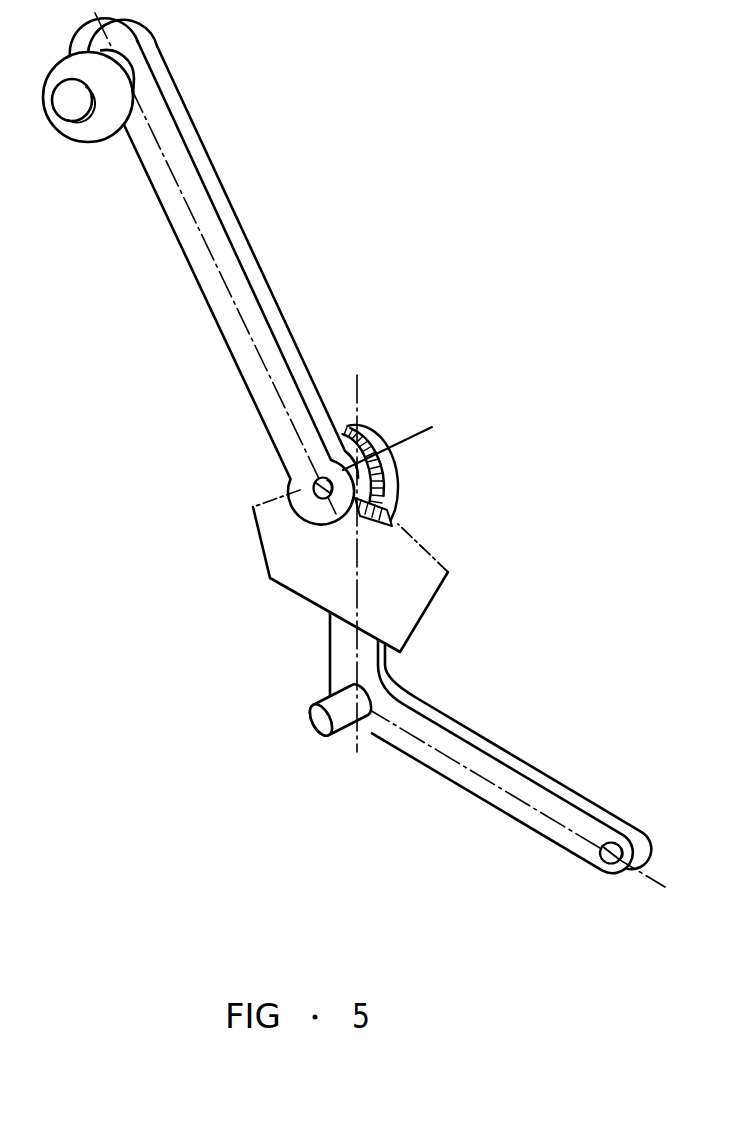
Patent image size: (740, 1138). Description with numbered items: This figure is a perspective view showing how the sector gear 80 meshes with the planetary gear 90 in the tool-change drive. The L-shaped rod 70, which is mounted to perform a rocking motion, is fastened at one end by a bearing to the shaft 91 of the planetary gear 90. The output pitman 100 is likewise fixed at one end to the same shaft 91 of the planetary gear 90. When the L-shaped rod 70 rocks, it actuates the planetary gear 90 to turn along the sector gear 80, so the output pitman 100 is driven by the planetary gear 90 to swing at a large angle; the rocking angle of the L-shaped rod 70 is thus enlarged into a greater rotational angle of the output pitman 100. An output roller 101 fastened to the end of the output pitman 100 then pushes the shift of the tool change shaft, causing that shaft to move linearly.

The L-shaped rod 70 is at (438, 715).
The sector gear 80 is at (290, 553).
The planetary gear 90 is at (348, 430).
The shaft of the planetary gear 91 is at (312, 486).
The output pitman 100 is at (230, 253).
The output roller 101 is at (92, 128).